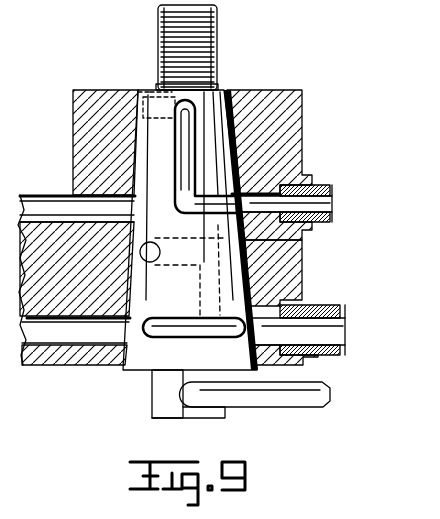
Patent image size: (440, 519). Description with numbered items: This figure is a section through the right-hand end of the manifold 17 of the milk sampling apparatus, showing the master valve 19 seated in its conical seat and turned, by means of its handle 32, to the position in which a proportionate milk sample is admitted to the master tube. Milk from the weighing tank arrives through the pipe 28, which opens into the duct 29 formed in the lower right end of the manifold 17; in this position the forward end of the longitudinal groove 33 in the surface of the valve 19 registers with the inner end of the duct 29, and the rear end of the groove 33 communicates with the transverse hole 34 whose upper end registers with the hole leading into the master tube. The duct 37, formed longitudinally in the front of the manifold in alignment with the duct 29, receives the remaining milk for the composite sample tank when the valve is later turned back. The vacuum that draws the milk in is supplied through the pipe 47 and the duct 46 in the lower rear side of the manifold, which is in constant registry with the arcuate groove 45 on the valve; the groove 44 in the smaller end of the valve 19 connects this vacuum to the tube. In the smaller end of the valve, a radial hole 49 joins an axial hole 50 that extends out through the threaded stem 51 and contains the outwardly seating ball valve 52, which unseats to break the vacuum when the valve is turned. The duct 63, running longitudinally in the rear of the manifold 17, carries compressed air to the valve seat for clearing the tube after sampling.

The manifold 17 is at (262, 290).
The master valve 19 is at (187, 251).
The pipe 28 is at (327, 338).
The duct 29 is at (283, 368).
The handle 32 is at (287, 398).
The groove 33 is at (310, 292).
The hole 34 is at (80, 267).
The duct 37 is at (76, 358).
The groove 44 is at (190, 132).
The arcuate groove 45 is at (281, 142).
The duct 46 is at (284, 181).
The pipe 47 is at (325, 224).
The hole 49 is at (143, 90).
The hole 50 is at (160, 90).
The threaded stem 51 is at (216, 36).
The ball valve 52 is at (217, 66).
The duct 63 is at (40, 205).